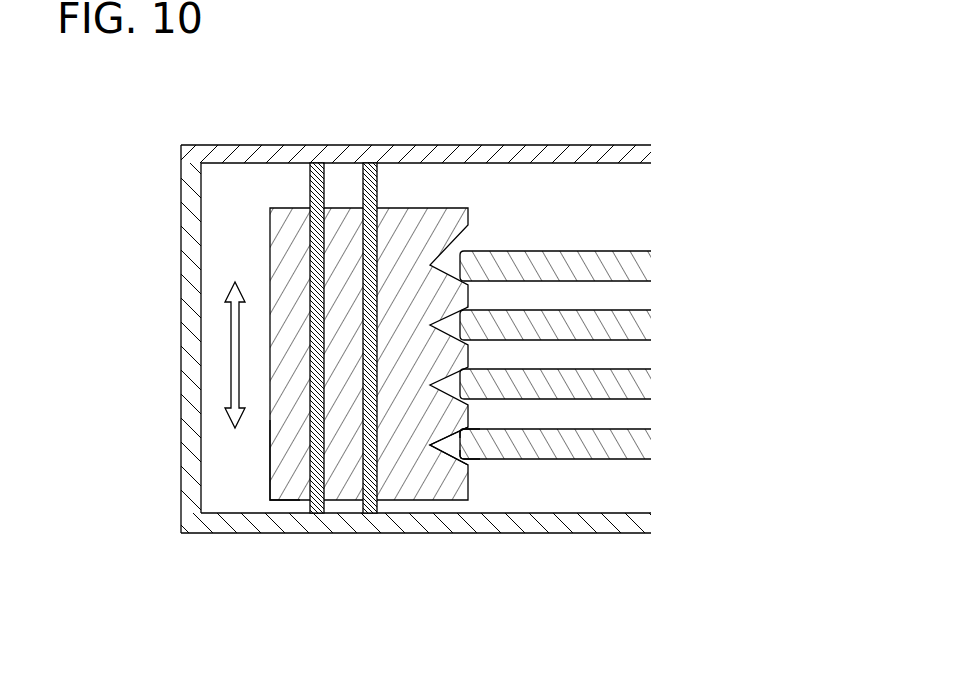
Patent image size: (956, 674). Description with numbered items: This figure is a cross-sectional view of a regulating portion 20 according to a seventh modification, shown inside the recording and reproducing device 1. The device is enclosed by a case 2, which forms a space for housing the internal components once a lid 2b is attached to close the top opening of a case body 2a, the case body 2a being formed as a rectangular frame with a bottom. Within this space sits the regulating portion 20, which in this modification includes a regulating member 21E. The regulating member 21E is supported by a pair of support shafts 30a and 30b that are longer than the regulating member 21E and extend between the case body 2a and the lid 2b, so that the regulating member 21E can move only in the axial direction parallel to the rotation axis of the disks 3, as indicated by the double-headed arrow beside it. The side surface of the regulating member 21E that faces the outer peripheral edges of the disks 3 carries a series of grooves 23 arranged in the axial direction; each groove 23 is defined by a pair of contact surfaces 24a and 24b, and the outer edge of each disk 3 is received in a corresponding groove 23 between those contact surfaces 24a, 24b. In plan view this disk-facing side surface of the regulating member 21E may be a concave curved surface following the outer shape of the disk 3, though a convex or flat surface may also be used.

The recording and reproducing device 1 is at (65, 122).
The case 2 is at (353, 342).
The case body 2a is at (452, 535).
The lid 2b is at (483, 144).
The disks 3 is at (610, 472).
The regulating portion 20 is at (416, 512).
The regulating member 21E is at (273, 477).
The grooves 23 is at (457, 445).
The contact surface 24a is at (463, 452).
The contact surface 24b is at (463, 433).
The support shaft 30a is at (357, 164).
The support shaft 30b is at (303, 164).